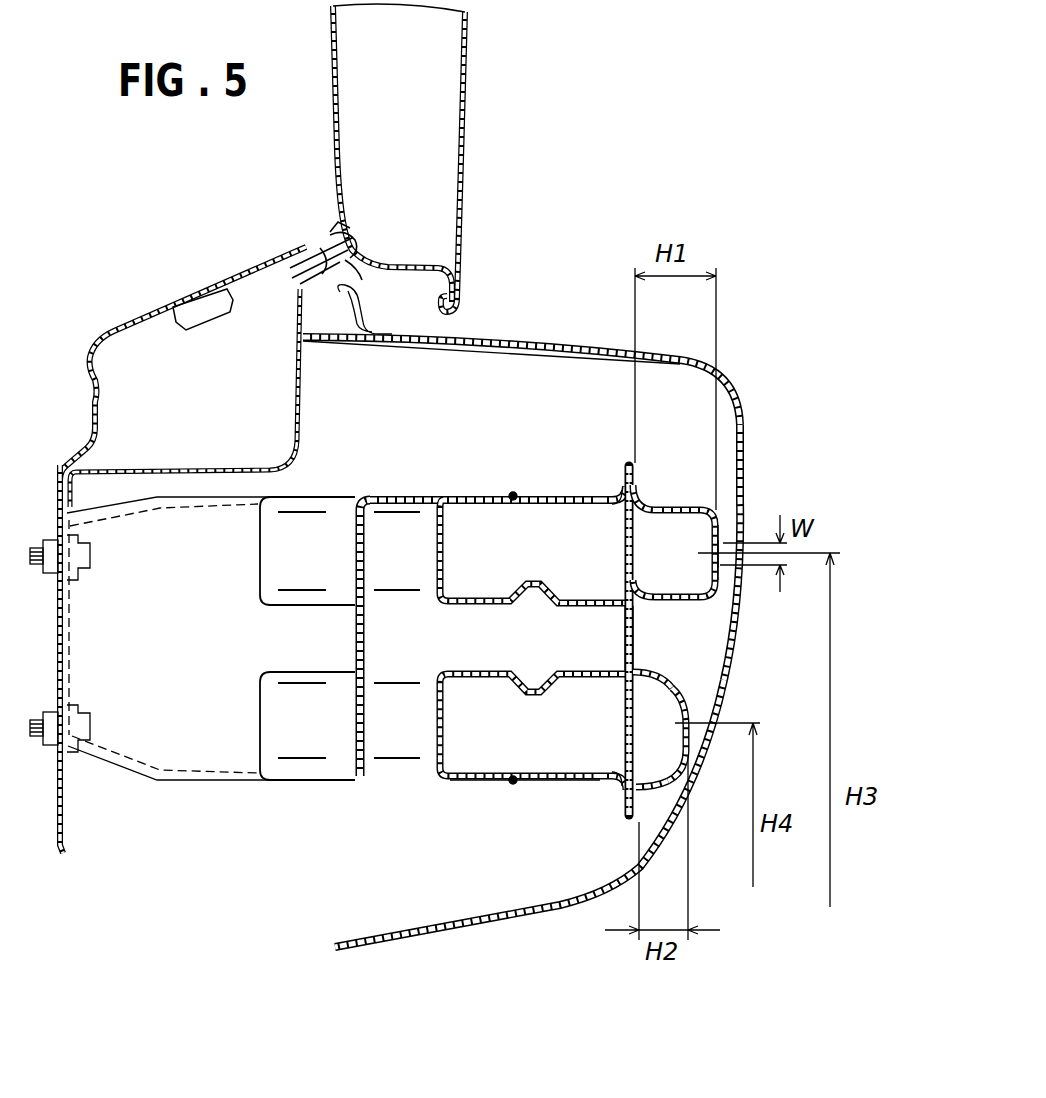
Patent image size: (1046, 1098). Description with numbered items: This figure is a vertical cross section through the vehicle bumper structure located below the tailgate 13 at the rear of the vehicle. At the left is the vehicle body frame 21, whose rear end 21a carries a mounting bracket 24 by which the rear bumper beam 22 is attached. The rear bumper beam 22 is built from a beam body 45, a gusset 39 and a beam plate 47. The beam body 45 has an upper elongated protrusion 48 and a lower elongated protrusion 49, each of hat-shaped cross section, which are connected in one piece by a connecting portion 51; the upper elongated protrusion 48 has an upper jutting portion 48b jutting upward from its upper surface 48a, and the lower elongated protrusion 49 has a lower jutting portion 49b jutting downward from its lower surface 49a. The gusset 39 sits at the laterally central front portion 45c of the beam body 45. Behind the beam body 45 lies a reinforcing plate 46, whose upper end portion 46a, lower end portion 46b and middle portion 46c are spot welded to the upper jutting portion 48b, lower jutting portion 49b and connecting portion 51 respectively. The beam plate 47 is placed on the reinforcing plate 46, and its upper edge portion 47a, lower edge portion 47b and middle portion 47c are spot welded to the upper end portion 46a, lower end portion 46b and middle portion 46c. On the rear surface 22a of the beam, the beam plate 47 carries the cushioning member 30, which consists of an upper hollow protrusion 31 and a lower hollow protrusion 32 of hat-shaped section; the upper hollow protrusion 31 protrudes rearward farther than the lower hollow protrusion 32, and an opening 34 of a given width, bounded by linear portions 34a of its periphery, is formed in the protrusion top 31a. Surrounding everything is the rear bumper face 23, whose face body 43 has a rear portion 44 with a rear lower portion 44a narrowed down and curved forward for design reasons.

The tailgate 13 is at (467, 82).
The vehicle body frame 21 is at (82, 336).
The rear end of vehicle body frame 21a is at (58, 470).
The rear bumper beam 22 is at (290, 470).
The rear surface of rear bumper beam 22a is at (672, 660).
The rear bumper face 23 is at (521, 318).
The mounting bracket 24 is at (155, 782).
The cushioning member 30 is at (712, 507).
The upper hollow protrusion 31 is at (712, 525).
The protrusion top 31a is at (722, 545).
The lower hollow protrusion 32 is at (692, 732).
The opening 34 is at (723, 566).
The linear portion 34a is at (717, 530).
The gusset 39 is at (355, 634).
The face body 43 is at (740, 370).
The rear portion of face body 44 is at (746, 410).
The rear lower portion 44a is at (725, 702).
The beam body 45 is at (430, 527).
The front central portion of beam body 45c is at (472, 523).
The reinforcing plate 46 is at (622, 530).
The upper end portion of reinforcing plate 46a is at (625, 467).
The lower end portion of reinforcing plate 46b is at (625, 812).
The middle portion of reinforcing plate 46c is at (622, 610).
The beam plate 47 is at (642, 500).
The upper edge portion of beam plate 47a is at (637, 487).
The lower edge portion of beam plate 47b is at (638, 793).
The middle portion of beam plate 47c is at (637, 626).
The upper elongated protrusion 48 is at (433, 560).
The upper surface 48a is at (557, 500).
The upper jutting portion 48b is at (620, 472).
The lower elongated protrusion 49 is at (433, 722).
The lower surface 49a is at (553, 780).
The lower jutting portion 49b is at (620, 790).
The connecting portion 51 is at (622, 630).